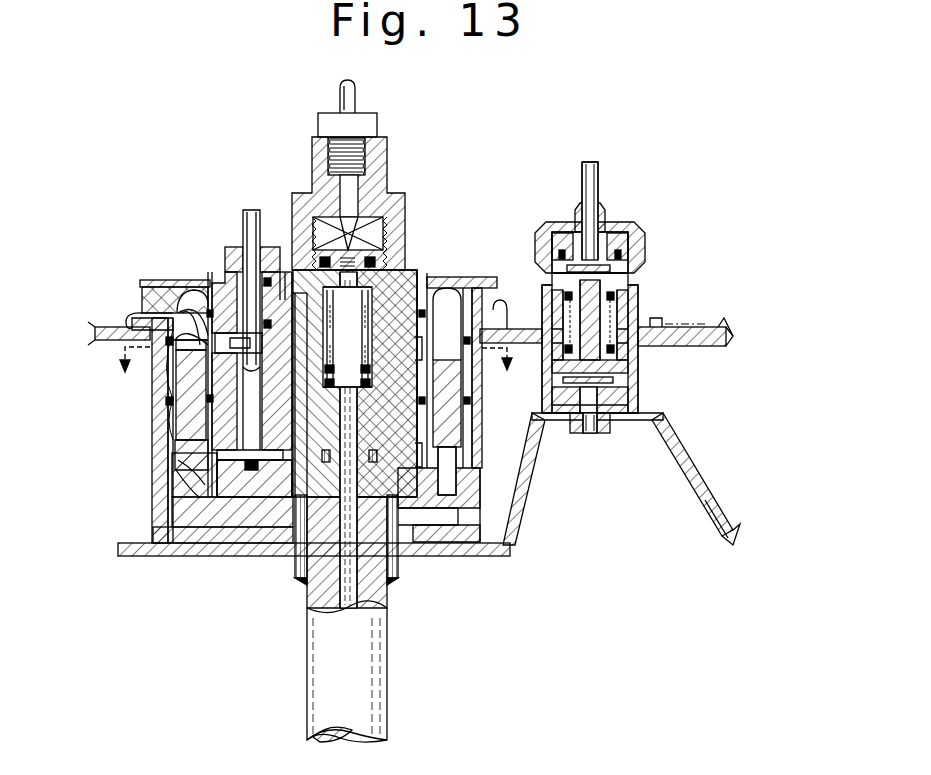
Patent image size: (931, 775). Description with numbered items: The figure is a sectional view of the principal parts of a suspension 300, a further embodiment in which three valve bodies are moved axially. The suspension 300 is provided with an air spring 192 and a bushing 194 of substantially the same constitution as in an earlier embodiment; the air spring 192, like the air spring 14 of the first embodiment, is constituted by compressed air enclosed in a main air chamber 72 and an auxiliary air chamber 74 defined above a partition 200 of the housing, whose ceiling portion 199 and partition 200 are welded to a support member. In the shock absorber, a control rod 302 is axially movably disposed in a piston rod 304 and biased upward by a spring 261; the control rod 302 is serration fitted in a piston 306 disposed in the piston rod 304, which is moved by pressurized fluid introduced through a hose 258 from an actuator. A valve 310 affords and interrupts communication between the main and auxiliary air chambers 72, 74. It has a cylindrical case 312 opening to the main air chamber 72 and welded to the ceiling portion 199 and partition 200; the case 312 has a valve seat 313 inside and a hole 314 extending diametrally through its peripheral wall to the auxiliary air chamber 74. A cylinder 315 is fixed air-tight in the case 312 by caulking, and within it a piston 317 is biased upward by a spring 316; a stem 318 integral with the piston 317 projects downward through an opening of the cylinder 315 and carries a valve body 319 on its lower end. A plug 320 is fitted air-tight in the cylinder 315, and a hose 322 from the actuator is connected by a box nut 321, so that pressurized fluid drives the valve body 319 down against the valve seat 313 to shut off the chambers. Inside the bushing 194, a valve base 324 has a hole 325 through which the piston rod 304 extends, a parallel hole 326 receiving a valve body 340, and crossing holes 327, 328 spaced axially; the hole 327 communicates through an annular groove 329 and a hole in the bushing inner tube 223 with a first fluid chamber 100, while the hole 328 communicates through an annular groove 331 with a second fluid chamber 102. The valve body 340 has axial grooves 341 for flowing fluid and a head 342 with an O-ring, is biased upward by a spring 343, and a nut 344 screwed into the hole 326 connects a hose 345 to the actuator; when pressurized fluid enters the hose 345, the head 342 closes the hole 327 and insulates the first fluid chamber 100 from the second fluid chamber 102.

The air spring 14 is at (306, 361).
The main air chamber 72 is at (713, 490).
The auxiliary air chamber 74 is at (700, 352).
The first fluid chamber 100 is at (190, 303).
The second fluid chamber 102 is at (197, 472).
The air spring 192 is at (723, 325).
The bushing 194 is at (172, 450).
The ceiling portion 199 is at (523, 325).
The partition 200 is at (677, 463).
The bushing inner tube 223 is at (180, 280).
The hose 258 is at (357, 100).
The spring 261 is at (405, 272).
The suspension 300 is at (476, 187).
The control rod 302 is at (347, 597).
The piston rod 304 is at (332, 673).
The piston 306 is at (350, 227).
The valve 310 is at (647, 290).
The cylindrical case 312 is at (638, 313).
The valve seat 313 is at (603, 413).
The hole 314 is at (630, 390).
The cylinder 315 is at (633, 290).
The spring 316 is at (647, 345).
The piston 317 is at (610, 250).
The stem 318 is at (533, 373).
The valve body 319 is at (590, 390).
The plug 320 is at (567, 223).
The box nut 321 is at (627, 227).
The hose 322 is at (598, 173).
The valve base 324 is at (233, 497).
The hole 325 is at (303, 573).
The hole 326 is at (197, 463).
The hole 327 is at (170, 428).
The hole 328 is at (210, 433).
The annular groove 329 is at (155, 360).
The annular groove 331 is at (187, 510).
The valve body 340 is at (207, 273).
The grooves 341 is at (142, 287).
The head 342 is at (287, 270).
The spring 343 is at (280, 443).
The nut 344 is at (233, 247).
The hose 345 is at (260, 215).